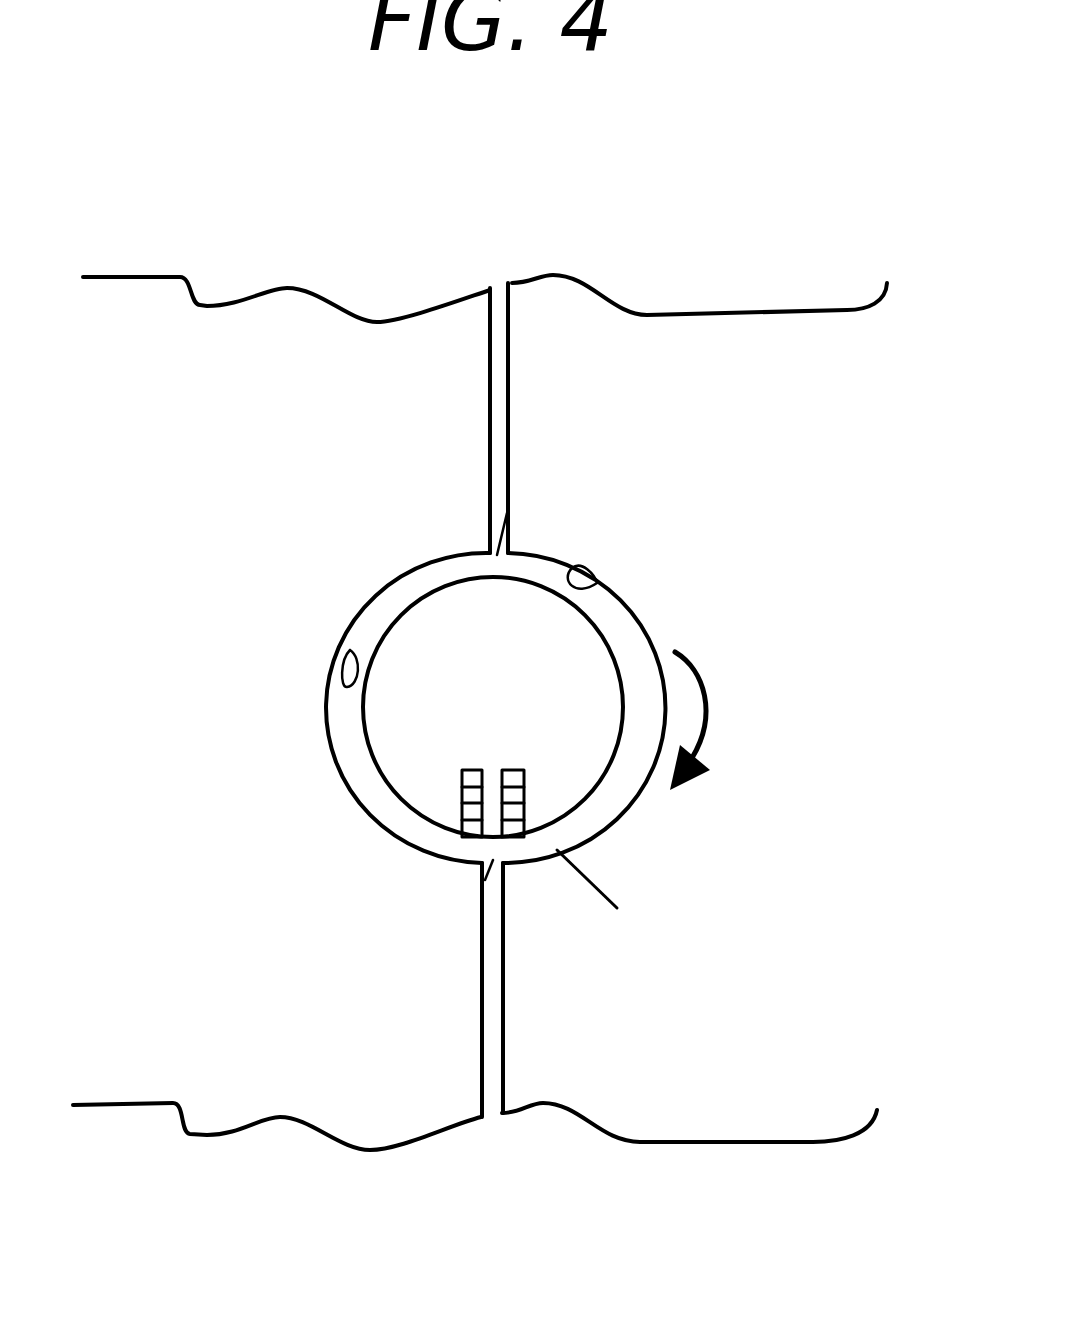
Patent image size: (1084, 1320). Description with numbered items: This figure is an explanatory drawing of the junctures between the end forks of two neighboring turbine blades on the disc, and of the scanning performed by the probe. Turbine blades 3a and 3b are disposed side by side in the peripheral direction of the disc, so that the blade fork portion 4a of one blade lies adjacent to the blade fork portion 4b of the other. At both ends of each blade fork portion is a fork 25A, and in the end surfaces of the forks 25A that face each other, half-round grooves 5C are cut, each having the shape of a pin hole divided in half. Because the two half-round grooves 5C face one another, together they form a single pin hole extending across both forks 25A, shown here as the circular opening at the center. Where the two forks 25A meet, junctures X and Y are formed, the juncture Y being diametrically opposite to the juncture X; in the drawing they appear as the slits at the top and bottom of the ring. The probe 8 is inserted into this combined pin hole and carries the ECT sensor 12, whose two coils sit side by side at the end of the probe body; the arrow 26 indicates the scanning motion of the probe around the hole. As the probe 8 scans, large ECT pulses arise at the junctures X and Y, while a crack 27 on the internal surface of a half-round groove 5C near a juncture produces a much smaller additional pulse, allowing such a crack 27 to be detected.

The turbine blade 3a is at (725, 345).
The turbine blade 3b is at (283, 342).
The blade fork portion 4a is at (792, 587).
The blade fork portion 4b is at (238, 655).
The half-round groove 5C is at (350, 650).
The probe 8 is at (368, 745).
The ECT sensor 12 is at (462, 805).
The rotation direction arrow 26 is at (707, 717).
The crack 27 is at (595, 880).
The fork 25A is at (145, 1078).
The juncture X is at (510, 513).
The juncture Y is at (480, 888).